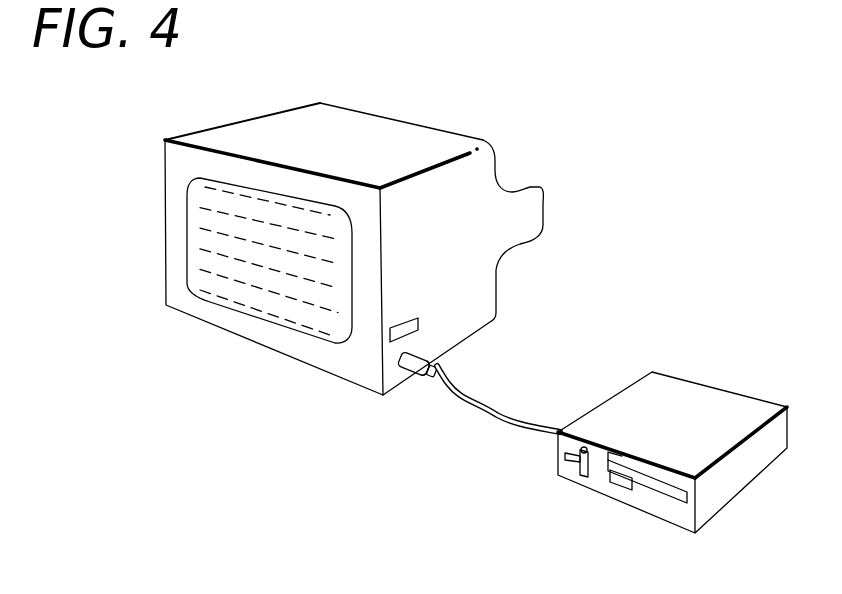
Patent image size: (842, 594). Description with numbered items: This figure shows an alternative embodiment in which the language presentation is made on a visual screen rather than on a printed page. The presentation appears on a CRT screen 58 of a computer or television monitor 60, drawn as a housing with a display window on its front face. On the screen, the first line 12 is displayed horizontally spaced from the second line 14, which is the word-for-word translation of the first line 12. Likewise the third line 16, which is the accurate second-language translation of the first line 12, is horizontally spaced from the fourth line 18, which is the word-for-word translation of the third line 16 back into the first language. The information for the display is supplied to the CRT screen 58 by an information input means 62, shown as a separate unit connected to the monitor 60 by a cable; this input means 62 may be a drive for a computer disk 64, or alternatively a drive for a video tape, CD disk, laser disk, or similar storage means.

The first line 12 is at (230, 192).
The second line 14 is at (300, 205).
The third line 16 is at (217, 210).
The fourth line 18 is at (337, 243).
The CRT screen 58 is at (200, 297).
The computer or television monitor 60 is at (412, 133).
The information input means 62 is at (720, 402).
The computer disk 64 is at (655, 492).